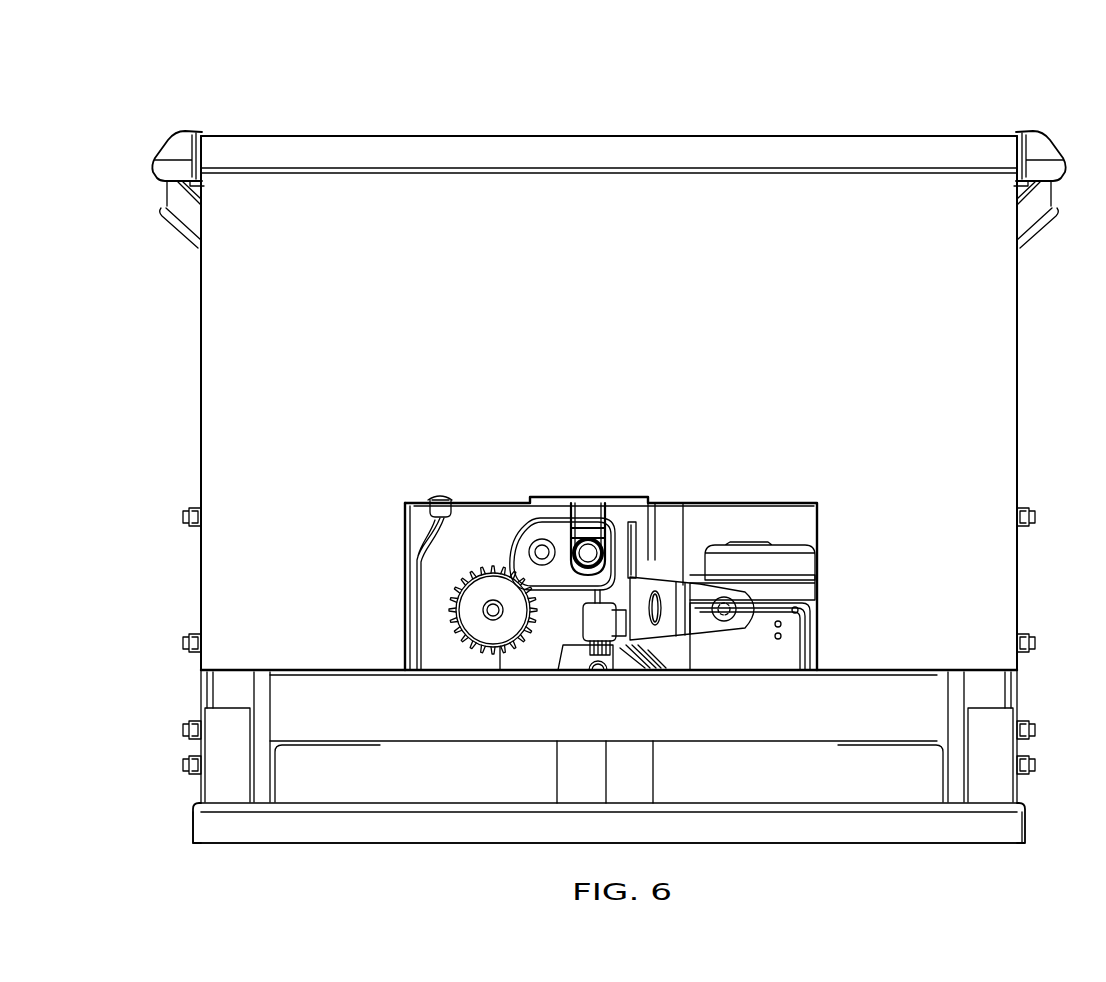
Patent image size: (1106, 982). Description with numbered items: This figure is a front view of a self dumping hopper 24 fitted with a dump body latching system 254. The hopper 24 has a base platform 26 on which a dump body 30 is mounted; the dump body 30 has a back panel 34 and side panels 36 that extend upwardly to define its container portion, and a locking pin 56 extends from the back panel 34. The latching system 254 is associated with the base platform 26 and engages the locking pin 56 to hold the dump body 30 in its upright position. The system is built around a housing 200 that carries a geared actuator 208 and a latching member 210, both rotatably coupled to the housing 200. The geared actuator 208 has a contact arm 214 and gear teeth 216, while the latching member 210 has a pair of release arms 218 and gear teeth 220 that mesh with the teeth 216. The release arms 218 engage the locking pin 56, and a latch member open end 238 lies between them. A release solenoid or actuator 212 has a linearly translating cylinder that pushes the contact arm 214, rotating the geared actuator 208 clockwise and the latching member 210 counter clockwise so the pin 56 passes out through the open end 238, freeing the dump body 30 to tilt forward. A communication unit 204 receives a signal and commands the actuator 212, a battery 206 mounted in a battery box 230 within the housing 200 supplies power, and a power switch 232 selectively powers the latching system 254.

The self dumping hopper 24 is at (960, 96).
The dump body 30 is at (993, 287).
The side panel 36 is at (1018, 327).
The back panel 34 is at (1000, 396).
The base platform 26 is at (1027, 822).
The dump body latching system 254 is at (800, 460).
The housing 200 is at (410, 522).
The power switch 232 is at (440, 497).
The latching member 210 is at (527, 533).
The release arms 218 is at (588, 528).
The locking pin 56 is at (590, 540).
The latch member open end 238 is at (614, 540).
The gear teeth 220 is at (517, 541).
The gear teeth 216 is at (449, 600).
The geared actuator 208 is at (462, 627).
The contact arm 214 is at (489, 664).
The release solenoid or actuator 212 is at (546, 666).
The battery 206 is at (805, 556).
The battery box 230 is at (801, 583).
The communication unit 204 is at (773, 659).